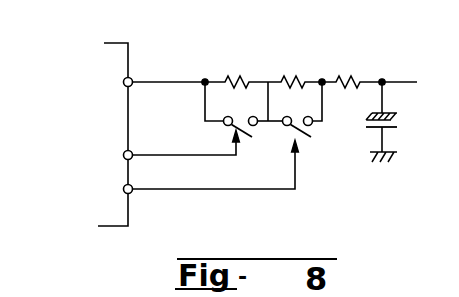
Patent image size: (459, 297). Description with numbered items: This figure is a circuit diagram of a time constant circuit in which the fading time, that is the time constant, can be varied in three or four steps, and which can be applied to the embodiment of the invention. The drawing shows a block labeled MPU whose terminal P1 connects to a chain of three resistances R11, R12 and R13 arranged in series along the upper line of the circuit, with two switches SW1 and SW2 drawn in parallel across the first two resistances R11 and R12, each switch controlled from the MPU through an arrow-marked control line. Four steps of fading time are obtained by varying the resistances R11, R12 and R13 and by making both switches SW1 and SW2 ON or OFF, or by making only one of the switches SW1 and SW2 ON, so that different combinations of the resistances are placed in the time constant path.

The microprocessor unit MPU is at (87, 134).
The port P1 is at (169, 61).
The resistance R11 is at (236, 64).
The resistance R12 is at (295, 64).
The resistance R13 is at (352, 64).
The switch SW1 is at (201, 118).
The switch SW2 is at (243, 135).